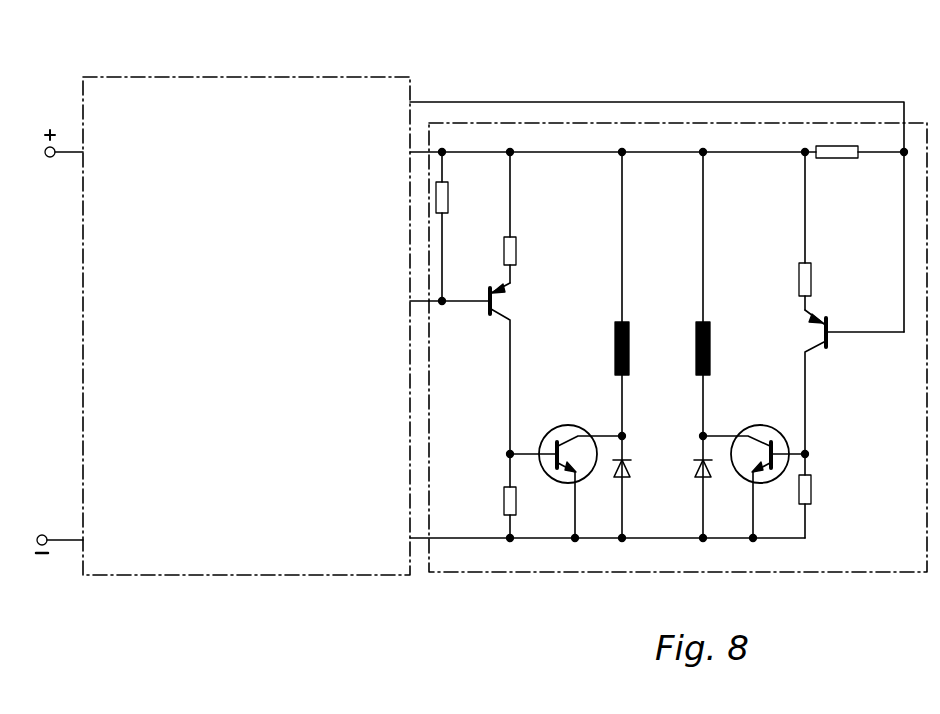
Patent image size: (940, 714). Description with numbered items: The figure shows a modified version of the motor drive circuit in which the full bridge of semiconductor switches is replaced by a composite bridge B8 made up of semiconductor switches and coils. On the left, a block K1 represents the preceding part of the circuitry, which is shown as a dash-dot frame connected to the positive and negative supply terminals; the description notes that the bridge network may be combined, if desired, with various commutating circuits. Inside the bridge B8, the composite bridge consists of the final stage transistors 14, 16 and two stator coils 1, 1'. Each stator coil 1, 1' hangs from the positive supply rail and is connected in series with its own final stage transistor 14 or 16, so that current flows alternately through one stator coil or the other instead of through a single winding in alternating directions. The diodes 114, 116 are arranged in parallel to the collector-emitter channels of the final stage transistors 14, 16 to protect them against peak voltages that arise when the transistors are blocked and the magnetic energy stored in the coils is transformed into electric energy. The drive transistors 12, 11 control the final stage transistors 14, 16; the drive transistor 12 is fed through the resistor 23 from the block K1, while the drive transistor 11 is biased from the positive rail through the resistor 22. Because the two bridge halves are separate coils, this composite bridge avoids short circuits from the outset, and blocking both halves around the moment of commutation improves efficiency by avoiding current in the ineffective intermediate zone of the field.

The power supply unit K1 is at (273, 77).
The circuit block B8 is at (680, 123).
The resistor 23 is at (448, 201).
The drive transistor 12 is at (488, 304).
The stator coil 1 is at (639, 294).
The stator coil 1' is at (724, 294).
The final stage transistor 14 is at (568, 433).
The diode 114 is at (630, 470).
The diode 116 is at (697, 463).
The final stage transistor 16 is at (762, 435).
The drive transistor 11 is at (829, 321).
The resistor 22 is at (843, 158).